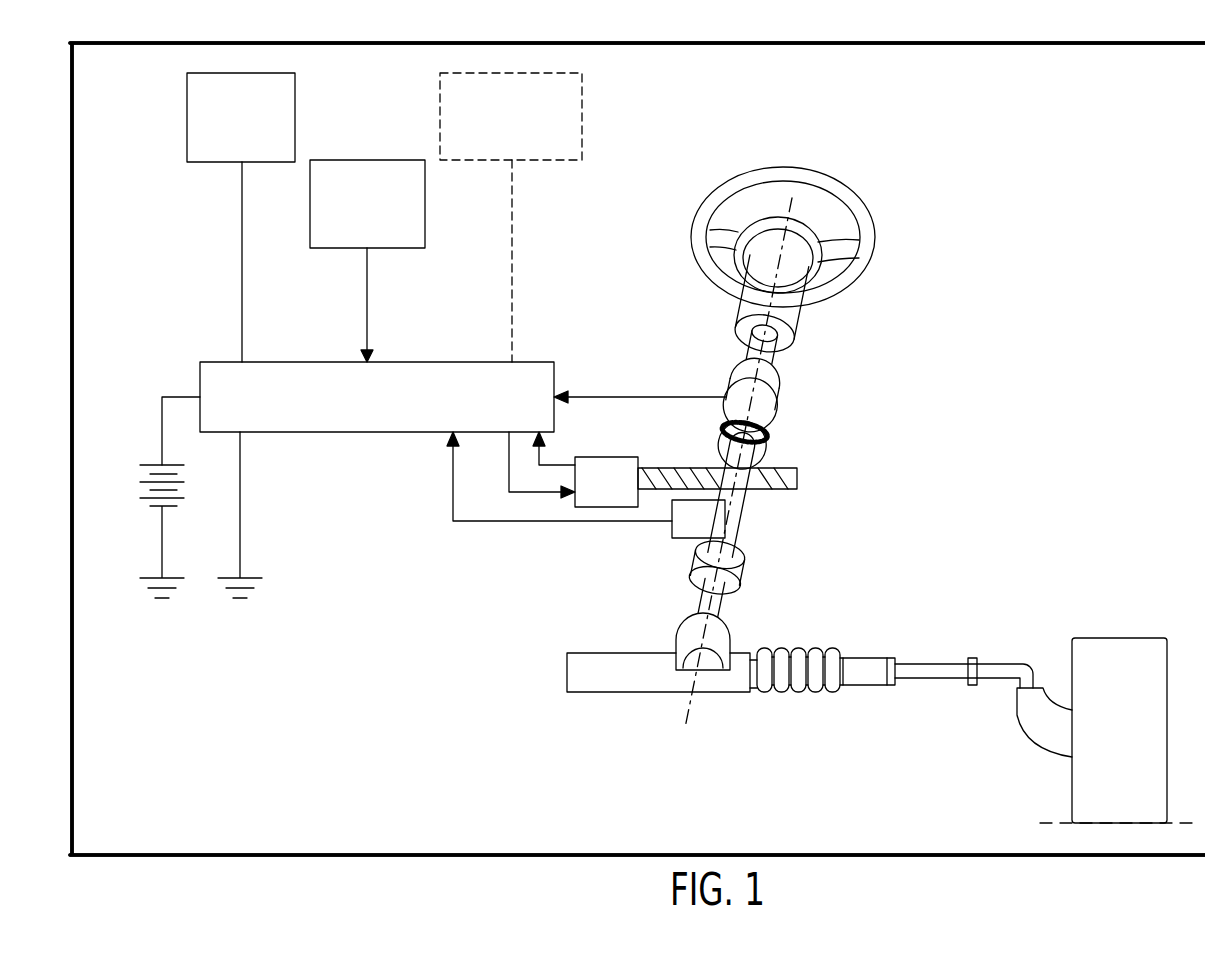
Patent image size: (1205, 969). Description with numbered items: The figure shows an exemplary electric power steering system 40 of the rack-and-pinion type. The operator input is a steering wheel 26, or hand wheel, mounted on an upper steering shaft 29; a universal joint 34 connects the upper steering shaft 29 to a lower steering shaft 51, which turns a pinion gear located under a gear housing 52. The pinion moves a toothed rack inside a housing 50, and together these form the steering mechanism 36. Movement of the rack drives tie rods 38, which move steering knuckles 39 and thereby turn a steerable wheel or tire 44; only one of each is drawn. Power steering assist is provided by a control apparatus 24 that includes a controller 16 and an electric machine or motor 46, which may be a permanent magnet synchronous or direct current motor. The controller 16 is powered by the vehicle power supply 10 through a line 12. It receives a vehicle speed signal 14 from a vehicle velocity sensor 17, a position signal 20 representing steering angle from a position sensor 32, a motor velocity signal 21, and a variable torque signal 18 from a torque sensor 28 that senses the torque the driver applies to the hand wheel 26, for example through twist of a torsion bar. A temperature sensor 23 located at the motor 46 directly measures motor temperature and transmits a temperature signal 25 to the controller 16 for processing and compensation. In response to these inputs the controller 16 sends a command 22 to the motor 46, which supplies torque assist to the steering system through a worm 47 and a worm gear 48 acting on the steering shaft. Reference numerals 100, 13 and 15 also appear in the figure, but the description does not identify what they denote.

The steering system 100 is at (70, 440).
The vehicle power supply 10 is at (145, 480).
The line 12 is at (178, 395).
The storage media 13 is at (206, 165).
The vehicle speed signal 14 is at (367, 310).
The storage media connection 15 is at (242, 288).
The controller 16 is at (360, 433).
The vehicle velocity sensor 17 is at (325, 250).
The torque signal 18 is at (655, 397).
The position signal 20 is at (562, 521).
The motor velocity signal 21 is at (530, 455).
The command 22 is at (523, 497).
The temperature sensor 23 is at (465, 163).
The control apparatus 24 is at (957, 378).
The temperature signal 25 is at (512, 282).
The steering wheel 26 is at (830, 200).
The torque sensor 28 is at (818, 385).
The upper steering shaft 29 is at (808, 325).
The position sensor 32 is at (672, 530).
The universal joint 34 is at (734, 563).
The steering mechanism 36 is at (820, 640).
The tie rods 38 is at (930, 677).
The steering knuckles 39 is at (1042, 718).
The electric power steering system 40 is at (1030, 470).
The steerable wheel 44 is at (1105, 648).
The electric motor 46 is at (618, 457).
The worm 47 is at (795, 485).
The worm gear 48 is at (805, 448).
The housing 50 is at (602, 682).
The lower steering shaft 51 is at (730, 600).
The gear housing 52 is at (687, 635).